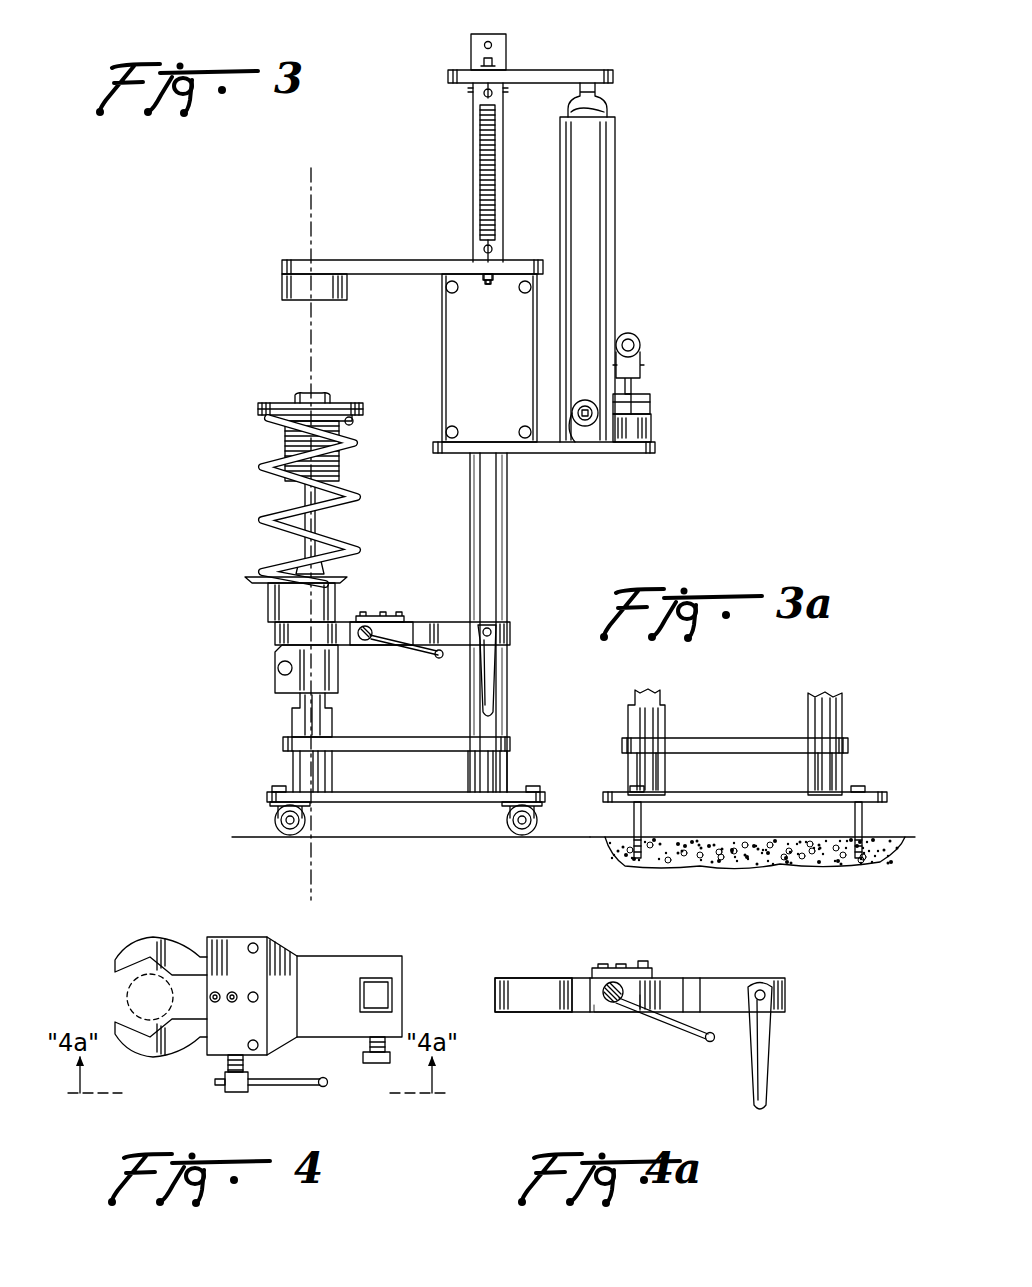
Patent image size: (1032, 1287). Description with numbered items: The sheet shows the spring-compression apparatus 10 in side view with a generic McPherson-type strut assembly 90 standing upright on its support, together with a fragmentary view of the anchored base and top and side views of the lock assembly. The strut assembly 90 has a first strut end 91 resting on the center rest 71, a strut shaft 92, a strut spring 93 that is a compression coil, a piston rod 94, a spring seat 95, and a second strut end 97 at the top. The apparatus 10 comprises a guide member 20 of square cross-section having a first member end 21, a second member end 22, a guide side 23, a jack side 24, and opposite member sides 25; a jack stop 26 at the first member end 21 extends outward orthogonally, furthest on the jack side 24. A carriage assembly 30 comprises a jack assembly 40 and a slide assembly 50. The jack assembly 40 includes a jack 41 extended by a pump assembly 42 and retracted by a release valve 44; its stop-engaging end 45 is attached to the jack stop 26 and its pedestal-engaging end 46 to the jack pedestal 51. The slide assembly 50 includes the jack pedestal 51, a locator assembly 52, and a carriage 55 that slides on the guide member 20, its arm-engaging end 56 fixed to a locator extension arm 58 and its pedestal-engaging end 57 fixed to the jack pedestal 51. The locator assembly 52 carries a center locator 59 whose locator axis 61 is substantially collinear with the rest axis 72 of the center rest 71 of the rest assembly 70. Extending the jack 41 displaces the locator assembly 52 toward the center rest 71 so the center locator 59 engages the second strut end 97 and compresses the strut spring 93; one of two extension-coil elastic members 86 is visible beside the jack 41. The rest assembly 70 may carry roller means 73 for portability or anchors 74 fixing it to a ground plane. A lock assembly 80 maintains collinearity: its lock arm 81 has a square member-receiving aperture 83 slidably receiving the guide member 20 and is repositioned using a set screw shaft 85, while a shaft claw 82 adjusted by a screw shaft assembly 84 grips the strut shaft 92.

In FIG. 3, the spring-compression apparatus 10 is at (697, 95).
In FIG. 3, the guide member 20 is at (476, 622).
In FIG. 3, the first member end 21 is at (469, 44).
In FIG. 3, the second member end 22 is at (490, 770).
In FIG. 3A, the second member end 22 is at (815, 771).
In FIG. 3, the guide side 23 is at (469, 492).
In FIG. 3, the jack side 24 is at (508, 506).
In FIG. 3, the member sides 25 is at (489, 576).
In FIG. 3A, the member sides 25 is at (812, 712).
In FIG. 3, the jack stop 26 is at (543, 70).
In FIG. 3, the carriage assembly 30 is at (668, 262).
In FIG. 3, the jack assembly 40 is at (651, 262).
In FIG. 3, the jack 41 is at (598, 176).
In FIG. 3, the pump assembly 42 is at (646, 368).
In FIG. 3, the release valve 44 is at (587, 418).
In FIG. 3, the stop-engaging end 45 is at (601, 88).
In FIG. 3, the pedestal-engaging end 46 is at (603, 428).
In FIG. 3, the slide assembly 50 is at (447, 358).
In FIG. 3, the jack pedestal 51 is at (656, 448).
In FIG. 3, the locator assembly 52 is at (375, 249).
In FIG. 3, the carriage 55 is at (458, 337).
In FIG. 3, the arm-engaging end 56 is at (440, 288).
In FIG. 3, the pedestal-engaging end 57 is at (442, 432).
In FIG. 3, the locator extension arm 58 is at (299, 262).
In FIG. 3, the center locator 59 is at (282, 287).
In FIG. 3, the locator axis 61 is at (309, 183).
In FIG. 3, the rest assembly 70 is at (380, 787).
In FIG. 3A, the rest assembly 70 is at (751, 724).
In FIG. 3, the center rest 71 is at (300, 722).
In FIG. 3A, the center rest 71 is at (660, 724).
In FIG. 3, the rest axis 72 is at (307, 876).
In FIG. 3, the roller means 73 is at (265, 818).
In FIG. 3A, the anchors 74 is at (860, 818).
In FIG. 3, the lock assembly 80 is at (333, 637).
In FIG. 4, the lock assembly 80 is at (214, 1003).
In FIG. 4A, the lock assembly 80 is at (667, 1011).
In FIG. 3, the lock arm 81 is at (441, 625).
In FIG. 4, the lock arm 81 is at (328, 972).
In FIG. 4A, the lock arm 81 is at (712, 985).
In FIG. 3, the shaft claw 82 is at (282, 636).
In FIG. 4, the shaft claw 82 is at (130, 940).
In FIG. 4A, the shaft claw 82 is at (535, 1000).
In FIG. 4, the member-receiving aperture 83 is at (374, 978).
In FIG. 4, the screw shaft assembly 84 is at (235, 1092).
In FIG. 4A, the screw shaft assembly 84 is at (612, 1000).
In FIG. 3, the set screw shaft 85 is at (487, 670).
In FIG. 4, the set screw shaft 85 is at (376, 1063).
In FIG. 4A, the set screw shaft 85 is at (765, 1048).
In FIG. 3, the elastic members 86 is at (481, 165).
In FIG. 3, the strut assembly 90 is at (260, 477).
In FIG. 3, the first strut end 91 is at (277, 692).
In FIG. 4, the strut shaft 92 is at (127, 998).
In FIG. 3, the strut spring 93 is at (268, 572).
In FIG. 3, the piston rod 94 is at (285, 500).
In FIG. 3, the spring seat 95 is at (268, 403).
In FIG. 3, the second strut end 97 is at (305, 392).